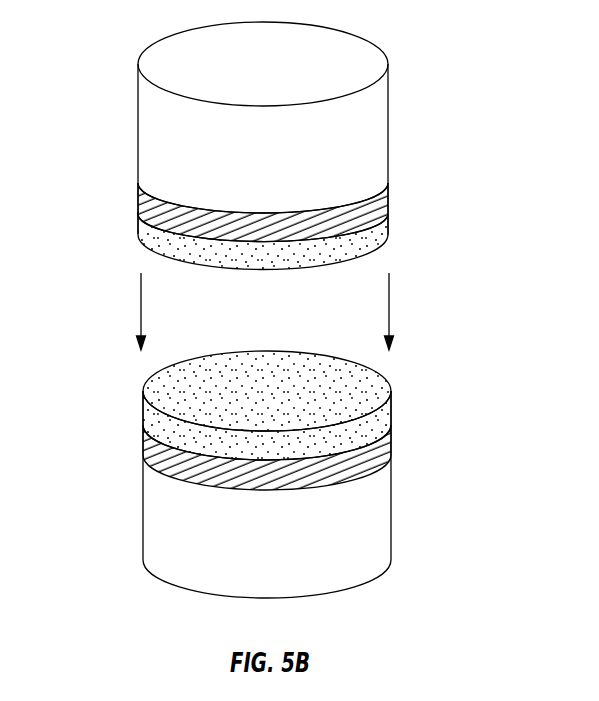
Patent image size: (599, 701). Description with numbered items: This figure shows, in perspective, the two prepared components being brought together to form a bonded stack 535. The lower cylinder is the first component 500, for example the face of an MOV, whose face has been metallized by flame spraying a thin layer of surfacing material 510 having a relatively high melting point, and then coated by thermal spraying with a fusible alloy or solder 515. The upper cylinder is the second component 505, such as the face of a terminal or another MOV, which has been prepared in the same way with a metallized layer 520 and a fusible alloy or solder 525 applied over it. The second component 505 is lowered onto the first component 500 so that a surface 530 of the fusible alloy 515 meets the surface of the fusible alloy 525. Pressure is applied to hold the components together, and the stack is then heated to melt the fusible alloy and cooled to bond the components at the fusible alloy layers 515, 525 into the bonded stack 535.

The first component 500 is at (393, 517).
The second component 505 is at (138, 125).
The surfacing material 510 is at (392, 440).
The fusible alloy or solder 515 is at (392, 407).
The metallized layer 520 is at (388, 193).
The fusible alloy or solder 525 is at (388, 222).
The surface of the fusible alloy 530 is at (153, 405).
The bonded stack 535 is at (13, 611).